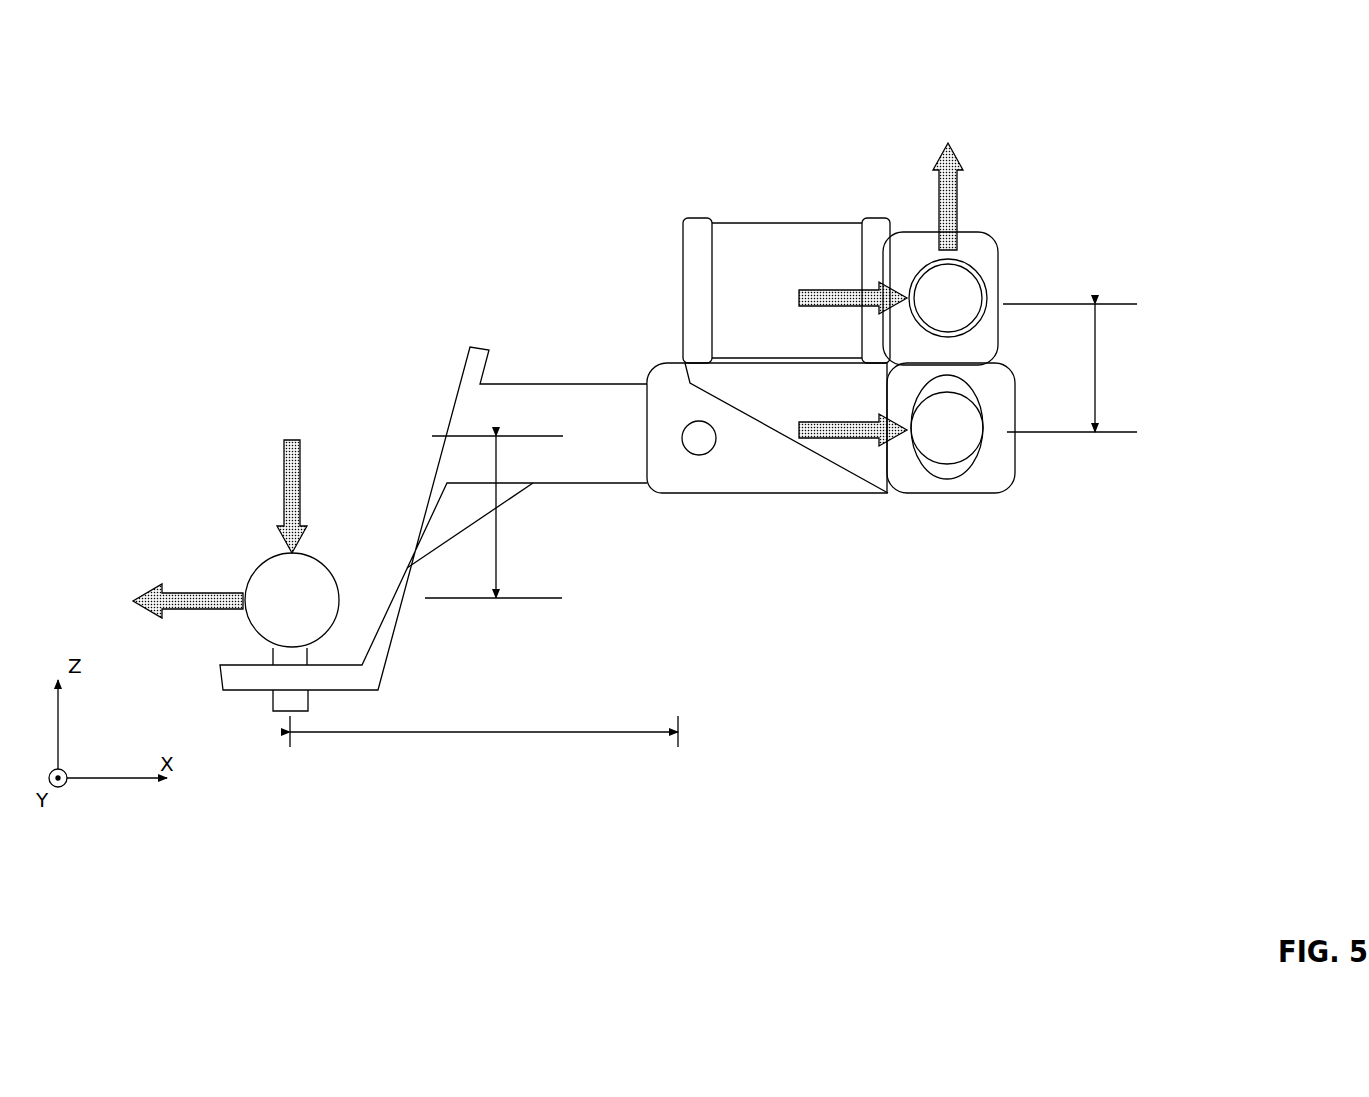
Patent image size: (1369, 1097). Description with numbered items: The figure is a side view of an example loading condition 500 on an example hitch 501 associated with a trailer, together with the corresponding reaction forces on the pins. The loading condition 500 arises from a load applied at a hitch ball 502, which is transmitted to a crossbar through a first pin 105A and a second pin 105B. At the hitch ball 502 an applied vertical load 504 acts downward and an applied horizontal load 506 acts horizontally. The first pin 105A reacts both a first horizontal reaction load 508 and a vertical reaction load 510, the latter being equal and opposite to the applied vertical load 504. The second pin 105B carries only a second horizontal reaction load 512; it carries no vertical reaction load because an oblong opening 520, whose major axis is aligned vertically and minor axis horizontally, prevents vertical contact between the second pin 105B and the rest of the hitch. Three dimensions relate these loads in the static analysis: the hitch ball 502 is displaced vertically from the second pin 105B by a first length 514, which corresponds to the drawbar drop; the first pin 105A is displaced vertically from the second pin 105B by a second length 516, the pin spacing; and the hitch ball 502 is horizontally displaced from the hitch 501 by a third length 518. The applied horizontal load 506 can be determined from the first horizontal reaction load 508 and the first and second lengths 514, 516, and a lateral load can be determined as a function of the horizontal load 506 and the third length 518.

The loading condition 500 is at (1133, 77).
The hitch 501 is at (1117, 130).
The hitch ball 502 is at (262, 565).
The vertical load 504 is at (282, 465).
The horizontal load 506 is at (146, 590).
The first horizontal reaction load 508 is at (825, 290).
The vertical reaction load 510 is at (943, 150).
The second horizontal reaction load 512 is at (830, 422).
The first length 514 is at (497, 540).
The second length 516 is at (1096, 372).
The third length 518 is at (393, 733).
The opening 520 is at (937, 468).
The first pin 105A is at (970, 258).
The second pin 105B is at (945, 462).